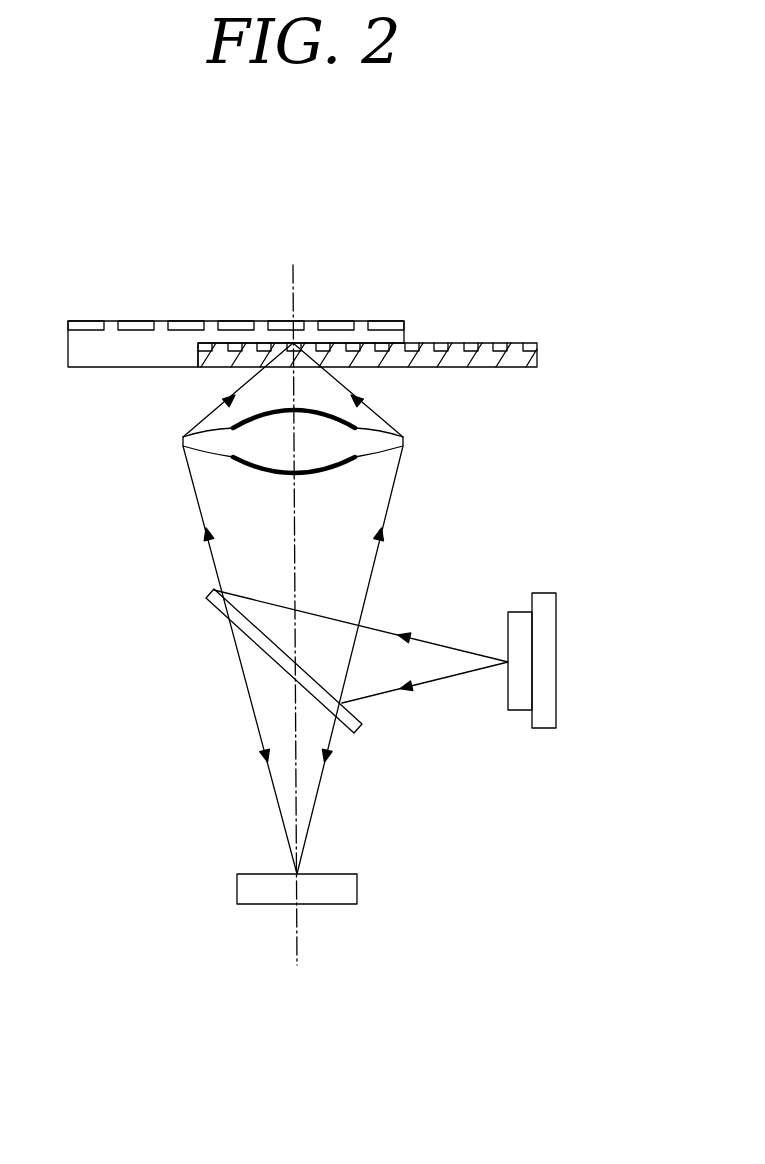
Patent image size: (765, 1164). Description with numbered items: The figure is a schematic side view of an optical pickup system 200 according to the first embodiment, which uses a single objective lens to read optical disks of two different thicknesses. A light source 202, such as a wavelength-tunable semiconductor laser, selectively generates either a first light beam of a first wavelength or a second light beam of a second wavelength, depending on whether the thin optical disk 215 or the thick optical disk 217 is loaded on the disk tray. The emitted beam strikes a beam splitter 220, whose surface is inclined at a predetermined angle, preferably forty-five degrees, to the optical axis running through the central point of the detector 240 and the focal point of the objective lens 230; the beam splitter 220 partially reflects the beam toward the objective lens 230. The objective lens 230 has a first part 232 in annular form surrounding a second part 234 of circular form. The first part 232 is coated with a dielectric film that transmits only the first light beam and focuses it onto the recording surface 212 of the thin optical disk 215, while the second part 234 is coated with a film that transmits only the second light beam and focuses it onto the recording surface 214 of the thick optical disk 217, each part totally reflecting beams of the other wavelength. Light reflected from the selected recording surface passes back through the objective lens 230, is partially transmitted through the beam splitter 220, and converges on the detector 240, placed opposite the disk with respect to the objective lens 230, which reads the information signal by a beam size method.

The optical pickup system 200 is at (537, 164).
The light source 202 is at (545, 638).
The recording surface of the thin optical disk 212 is at (528, 343).
The recording surface of the thick optical disk 214 is at (135, 324).
The thin optical disk 215 is at (513, 358).
The thick optical disk 217 is at (122, 356).
The beam splitter 220 is at (200, 596).
The objective lens 230 is at (293, 474).
The first part 232 is at (370, 443).
The second part 234 is at (265, 448).
The detector 240 is at (340, 893).